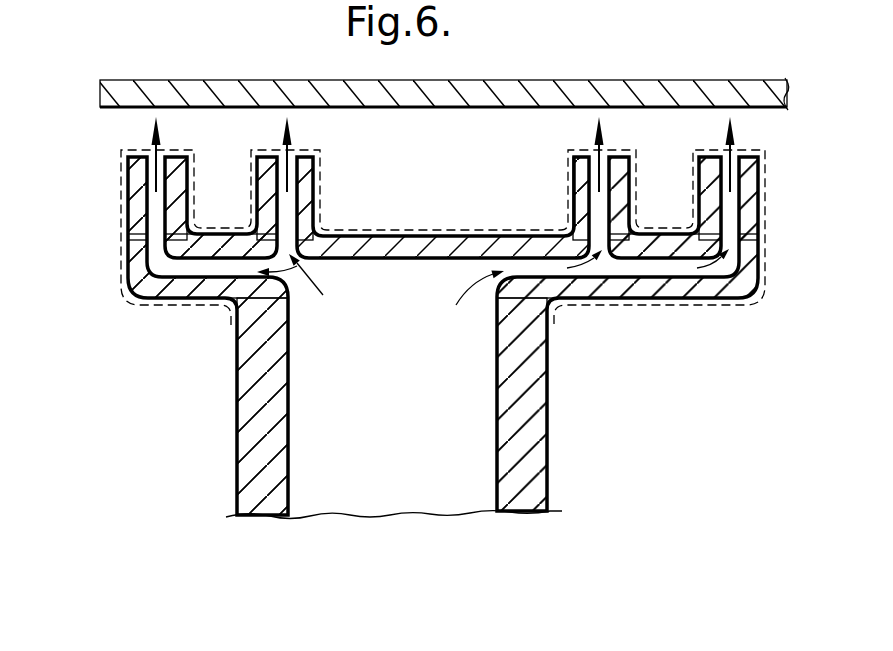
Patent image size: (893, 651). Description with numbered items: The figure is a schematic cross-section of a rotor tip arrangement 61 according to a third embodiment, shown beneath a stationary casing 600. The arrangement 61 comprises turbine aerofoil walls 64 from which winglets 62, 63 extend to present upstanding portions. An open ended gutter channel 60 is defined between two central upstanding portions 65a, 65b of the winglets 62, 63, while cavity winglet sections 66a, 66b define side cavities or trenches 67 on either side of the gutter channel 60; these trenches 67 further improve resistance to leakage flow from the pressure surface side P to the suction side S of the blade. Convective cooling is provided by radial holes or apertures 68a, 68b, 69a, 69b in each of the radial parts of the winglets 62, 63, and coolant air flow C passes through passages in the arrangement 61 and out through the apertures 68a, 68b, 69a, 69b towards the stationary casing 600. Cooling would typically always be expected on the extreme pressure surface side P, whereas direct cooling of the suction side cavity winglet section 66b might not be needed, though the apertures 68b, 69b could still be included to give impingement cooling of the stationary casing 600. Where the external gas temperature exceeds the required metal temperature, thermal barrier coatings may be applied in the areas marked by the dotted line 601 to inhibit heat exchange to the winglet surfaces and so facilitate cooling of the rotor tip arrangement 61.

The stationary casing 600 is at (686, 64).
The dotted line marking thermal barrier coating areas 601 is at (207, 178).
The open ended gutter channel 60 is at (522, 169).
The rotor tip arrangement 61 is at (553, 422).
The winglet 62 is at (626, 288).
The winglet 63 is at (166, 299).
The turbine aerofoil walls 64 is at (250, 488).
The central upstanding portion 65a is at (578, 210).
The central upstanding portion 65b is at (315, 210).
The cavity winglet section 66a is at (758, 204).
The cavity winglet section 66b is at (128, 199).
The side cavities or trenches 67 is at (223, 178).
The aperture 68a is at (741, 150).
The aperture 68b is at (152, 143).
The aperture 69a is at (596, 152).
The aperture 69b is at (292, 130).
The coolant air flow C is at (493, 292).
The suction side S is at (87, 239).
The pressure surface side P is at (780, 237).